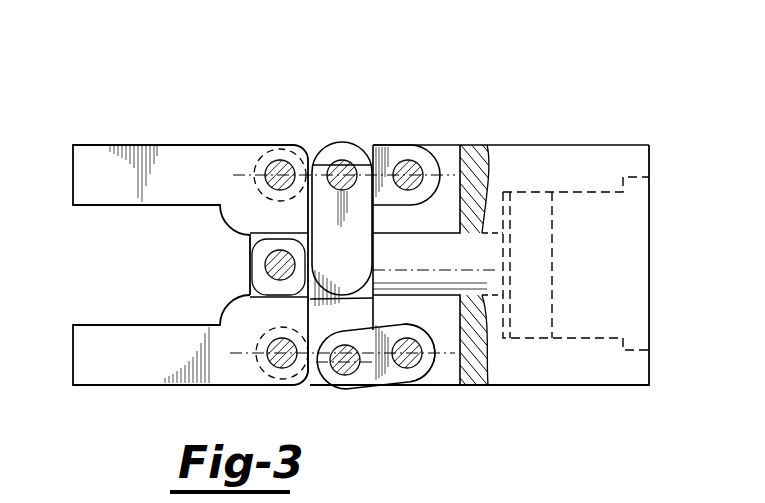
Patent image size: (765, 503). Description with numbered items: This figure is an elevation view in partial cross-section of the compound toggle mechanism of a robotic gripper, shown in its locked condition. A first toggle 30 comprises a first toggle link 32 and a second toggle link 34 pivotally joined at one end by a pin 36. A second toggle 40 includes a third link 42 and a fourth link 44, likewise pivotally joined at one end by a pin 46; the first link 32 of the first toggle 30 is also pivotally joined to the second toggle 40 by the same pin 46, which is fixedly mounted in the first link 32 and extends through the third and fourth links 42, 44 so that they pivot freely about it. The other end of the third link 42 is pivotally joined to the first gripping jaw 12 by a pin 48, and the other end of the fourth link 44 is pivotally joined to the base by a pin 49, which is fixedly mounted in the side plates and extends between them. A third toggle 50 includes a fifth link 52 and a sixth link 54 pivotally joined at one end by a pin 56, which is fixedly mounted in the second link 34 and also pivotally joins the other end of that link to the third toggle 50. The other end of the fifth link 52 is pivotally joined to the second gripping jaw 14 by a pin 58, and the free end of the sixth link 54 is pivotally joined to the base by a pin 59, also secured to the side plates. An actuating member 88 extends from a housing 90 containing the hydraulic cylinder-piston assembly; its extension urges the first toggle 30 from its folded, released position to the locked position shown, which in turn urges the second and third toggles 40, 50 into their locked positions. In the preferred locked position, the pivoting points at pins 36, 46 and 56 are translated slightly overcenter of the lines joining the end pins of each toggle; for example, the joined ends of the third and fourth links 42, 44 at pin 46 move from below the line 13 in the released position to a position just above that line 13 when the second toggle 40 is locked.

The first gripping jaw 12 is at (110, 150).
The second gripping jaw 14 is at (100, 372).
The lever length l3 13 is at (217, 181).
The first toggle 30 is at (323, 211).
The second toggle link 34 is at (323, 304).
The pin 36 is at (252, 291).
The second toggle 40 is at (315, 142).
The third link 42 is at (293, 152).
The pin 46 is at (344, 150).
The pin 48 is at (273, 170).
The first toggle link 32 is at (383, 162).
The fourth link 44 is at (402, 150).
The pin 49 is at (420, 173).
The actuating member 88 is at (440, 243).
The housing 90 is at (563, 160).
The third toggle 50 is at (368, 390).
The pin 56 is at (342, 378).
The sixth link 54 is at (392, 380).
The pin 59 is at (413, 363).
The pin 58 is at (267, 370).
The fifth link 52 is at (300, 372).